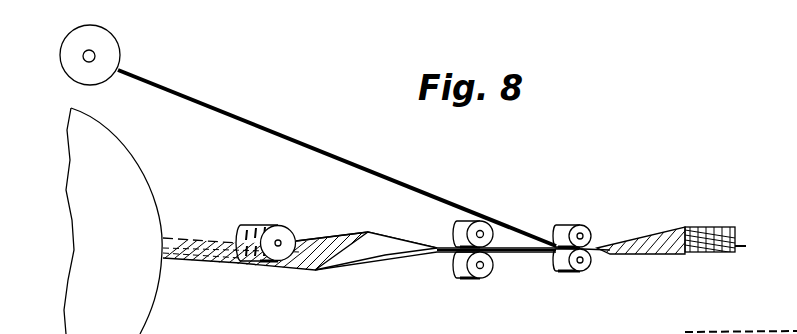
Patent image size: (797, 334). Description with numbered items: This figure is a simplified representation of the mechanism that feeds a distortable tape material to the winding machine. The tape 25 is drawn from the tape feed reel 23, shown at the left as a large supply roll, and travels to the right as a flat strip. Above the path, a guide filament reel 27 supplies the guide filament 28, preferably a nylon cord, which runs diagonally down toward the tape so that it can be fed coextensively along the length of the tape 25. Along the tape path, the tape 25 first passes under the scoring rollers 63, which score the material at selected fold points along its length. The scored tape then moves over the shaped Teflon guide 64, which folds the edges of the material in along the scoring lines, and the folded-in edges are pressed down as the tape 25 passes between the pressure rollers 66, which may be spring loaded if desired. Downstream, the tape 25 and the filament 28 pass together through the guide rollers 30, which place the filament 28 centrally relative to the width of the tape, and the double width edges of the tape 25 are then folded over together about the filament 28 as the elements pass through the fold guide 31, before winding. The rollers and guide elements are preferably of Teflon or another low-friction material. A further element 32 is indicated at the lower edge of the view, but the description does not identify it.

The tape feed reel 23 is at (133, 157).
The tape 25 is at (185, 262).
The guide filament reel 27 is at (118, 45).
The guide filament 28 is at (262, 127).
The guide rollers 30 is at (563, 228).
The fold guide 31 is at (675, 225).
The element 32 is at (499, 330).
The scoring rollers 63 is at (257, 222).
The shaped Teflon guide 64 is at (387, 232).
The pressure rollers 66 is at (454, 225).